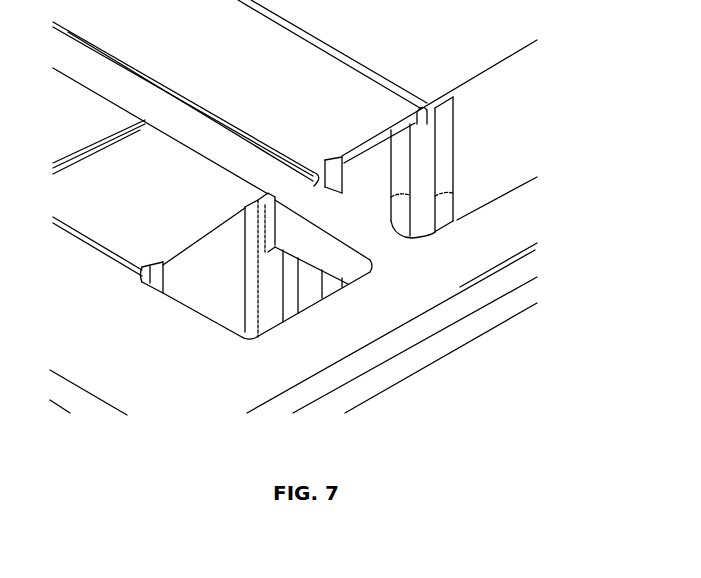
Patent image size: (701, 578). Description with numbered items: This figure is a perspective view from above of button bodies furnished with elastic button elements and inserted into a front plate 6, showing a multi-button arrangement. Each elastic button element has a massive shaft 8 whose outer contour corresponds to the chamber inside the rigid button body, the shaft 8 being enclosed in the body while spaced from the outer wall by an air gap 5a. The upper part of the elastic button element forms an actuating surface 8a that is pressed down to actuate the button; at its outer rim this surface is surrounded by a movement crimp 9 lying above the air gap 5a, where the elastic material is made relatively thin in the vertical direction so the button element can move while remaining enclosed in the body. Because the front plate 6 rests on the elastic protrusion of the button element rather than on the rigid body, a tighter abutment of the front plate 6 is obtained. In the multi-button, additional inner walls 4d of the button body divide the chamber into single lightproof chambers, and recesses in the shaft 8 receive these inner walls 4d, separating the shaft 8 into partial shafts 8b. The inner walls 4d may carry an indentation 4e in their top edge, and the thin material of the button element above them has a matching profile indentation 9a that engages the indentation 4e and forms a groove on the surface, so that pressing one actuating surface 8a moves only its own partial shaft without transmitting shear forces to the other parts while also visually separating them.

The inner walls 4d is at (439, 157).
The indentation 4e is at (439, 124).
The air gap 5a is at (250, 230).
The front plate 6 is at (465, 315).
The shaft 8 is at (257, 273).
The actuating surface 8a is at (160, 172).
The partial shafts 8b is at (406, 163).
The movement crimp 9 is at (334, 145).
The profile indentation 9a is at (404, 81).